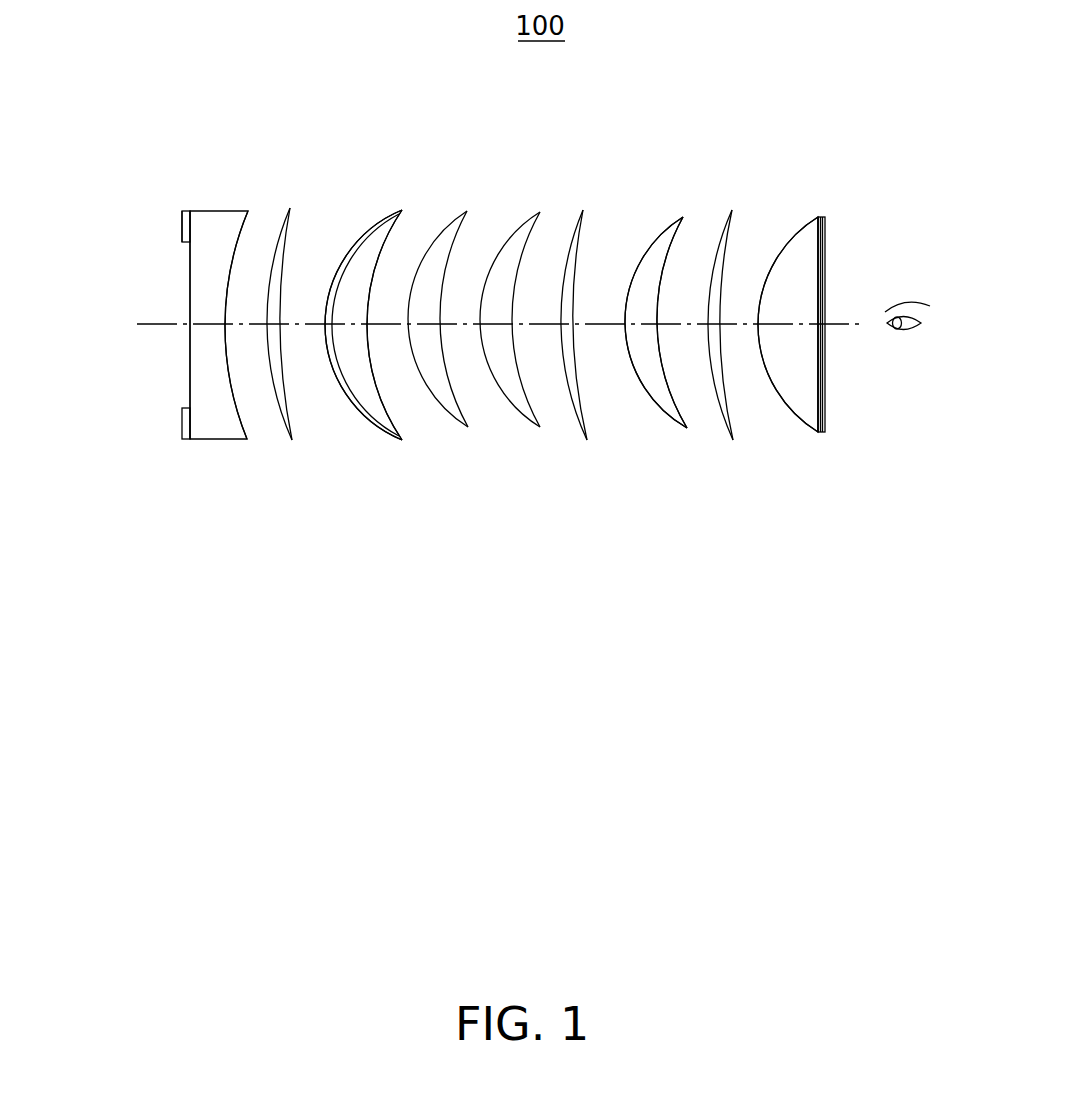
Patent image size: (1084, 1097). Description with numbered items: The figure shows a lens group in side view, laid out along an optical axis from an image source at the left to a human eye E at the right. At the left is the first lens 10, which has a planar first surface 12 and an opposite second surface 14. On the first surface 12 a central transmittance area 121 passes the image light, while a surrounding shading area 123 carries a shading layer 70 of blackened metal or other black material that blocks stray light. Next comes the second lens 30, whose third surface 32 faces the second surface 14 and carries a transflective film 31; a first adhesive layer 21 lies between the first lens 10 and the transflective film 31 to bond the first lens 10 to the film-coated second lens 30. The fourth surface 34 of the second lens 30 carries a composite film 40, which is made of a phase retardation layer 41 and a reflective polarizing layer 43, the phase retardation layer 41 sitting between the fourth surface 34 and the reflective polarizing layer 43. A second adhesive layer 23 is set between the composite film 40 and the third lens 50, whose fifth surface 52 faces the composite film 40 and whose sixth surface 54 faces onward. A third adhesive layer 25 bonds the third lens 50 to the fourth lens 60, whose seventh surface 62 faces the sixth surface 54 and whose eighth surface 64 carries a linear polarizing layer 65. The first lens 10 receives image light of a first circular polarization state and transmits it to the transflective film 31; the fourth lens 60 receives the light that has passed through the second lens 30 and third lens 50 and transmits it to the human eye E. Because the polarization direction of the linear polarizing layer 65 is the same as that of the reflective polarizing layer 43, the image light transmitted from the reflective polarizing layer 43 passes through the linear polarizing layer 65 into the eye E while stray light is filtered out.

The first lens 10 is at (227, 222).
The first surface 12 is at (190, 370).
The second surface 14 is at (243, 423).
The shading layer 70 is at (186, 217).
The transmittance area 121 is at (178, 238).
The shading area 123 is at (165, 335).
The first adhesive layer 21 is at (291, 210).
The second lens 30 is at (387, 222).
The transflective film 31 is at (372, 217).
The third surface 32 is at (367, 433).
The fourth surface 34 is at (402, 433).
The composite film 40 is at (552, 152).
The phase retardation layer 41 is at (463, 215).
The reflective polarizing layer 43 is at (533, 217).
The second adhesive layer 23 is at (582, 210).
The third lens 50 is at (668, 228).
The fifth surface 52 is at (667, 430).
The sixth surface 54 is at (688, 427).
The third adhesive layer 25 is at (727, 213).
The fourth lens 60 is at (810, 227).
The seventh surface 62 is at (805, 430).
The eighth surface 64 is at (822, 419).
The linear polarizing layer 65 is at (823, 213).
The human eye E is at (907, 340).